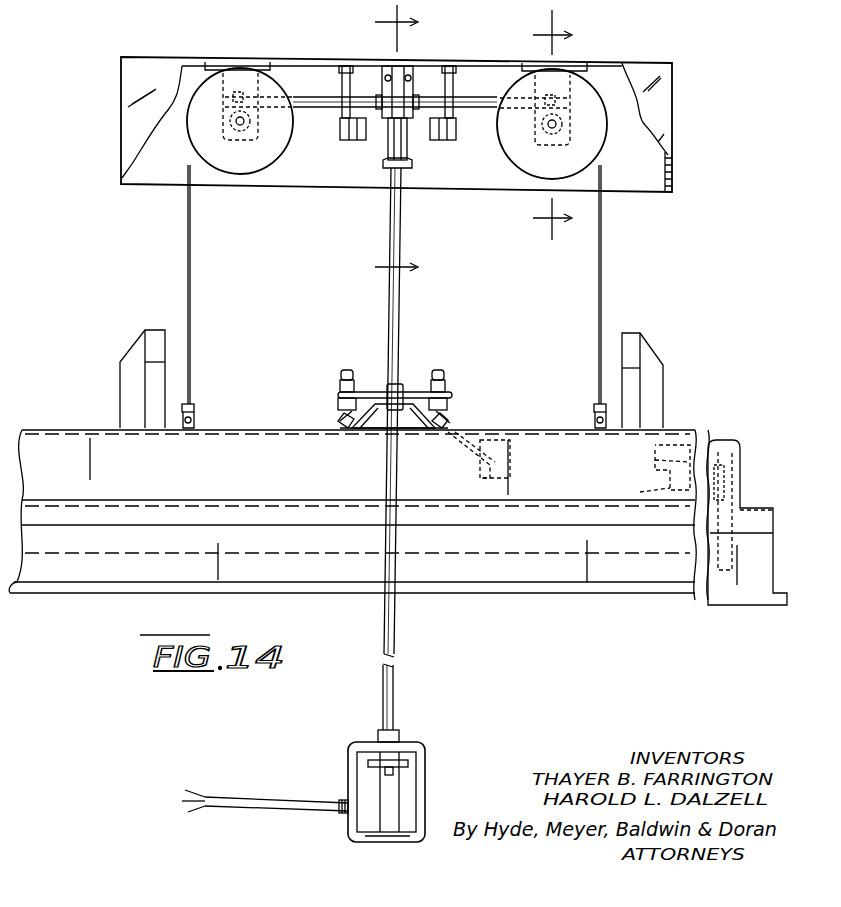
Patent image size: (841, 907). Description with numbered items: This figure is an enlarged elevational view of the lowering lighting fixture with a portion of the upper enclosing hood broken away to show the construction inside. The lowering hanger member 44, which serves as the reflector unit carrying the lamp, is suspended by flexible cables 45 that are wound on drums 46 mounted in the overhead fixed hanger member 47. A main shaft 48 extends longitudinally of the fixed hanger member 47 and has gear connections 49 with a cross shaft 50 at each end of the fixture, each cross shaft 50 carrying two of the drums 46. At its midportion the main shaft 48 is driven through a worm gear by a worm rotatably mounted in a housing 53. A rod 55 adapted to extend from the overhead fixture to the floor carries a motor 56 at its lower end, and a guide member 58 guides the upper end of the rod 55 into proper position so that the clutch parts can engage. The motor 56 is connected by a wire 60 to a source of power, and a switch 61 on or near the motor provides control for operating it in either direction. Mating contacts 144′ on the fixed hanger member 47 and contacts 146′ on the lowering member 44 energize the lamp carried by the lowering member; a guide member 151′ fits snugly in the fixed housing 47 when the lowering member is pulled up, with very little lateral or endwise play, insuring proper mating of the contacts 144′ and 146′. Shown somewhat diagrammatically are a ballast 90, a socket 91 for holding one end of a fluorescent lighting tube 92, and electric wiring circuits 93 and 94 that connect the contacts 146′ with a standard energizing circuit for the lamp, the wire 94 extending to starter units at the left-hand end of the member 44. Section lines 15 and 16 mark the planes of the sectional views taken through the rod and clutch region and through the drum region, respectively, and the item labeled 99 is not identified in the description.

The section line 15— 15 is at (411, 141).
The section line 16— 16 is at (567, 125).
The lowering hanger member 44 is at (42, 440).
The flexible cables 45 is at (188, 262).
The drums 46 is at (285, 150).
The fixed hanger member 47 is at (672, 107).
The main shaft 48 is at (485, 108).
The gear connections 49 is at (242, 92).
The cross shaft 50 is at (240, 131).
The housing 53 is at (400, 62).
The rod 55 is at (400, 232).
The motor 56 is at (425, 792).
The guide member 58 is at (407, 140).
The wire 60 is at (268, 805).
The switch 61 is at (388, 775).
The ballast 90 is at (478, 480).
The socket 91 is at (735, 478).
The fluorescent lighting tube 92 is at (565, 568).
The electric wiring circuit 93 is at (450, 424).
The electric wiring circuit 94 is at (338, 424).
The hidden member 99 is at (665, 468).
The mating contacts 144′ is at (356, 142).
The mating contacts 146′ is at (345, 370).
The guide member 151′ is at (120, 372).